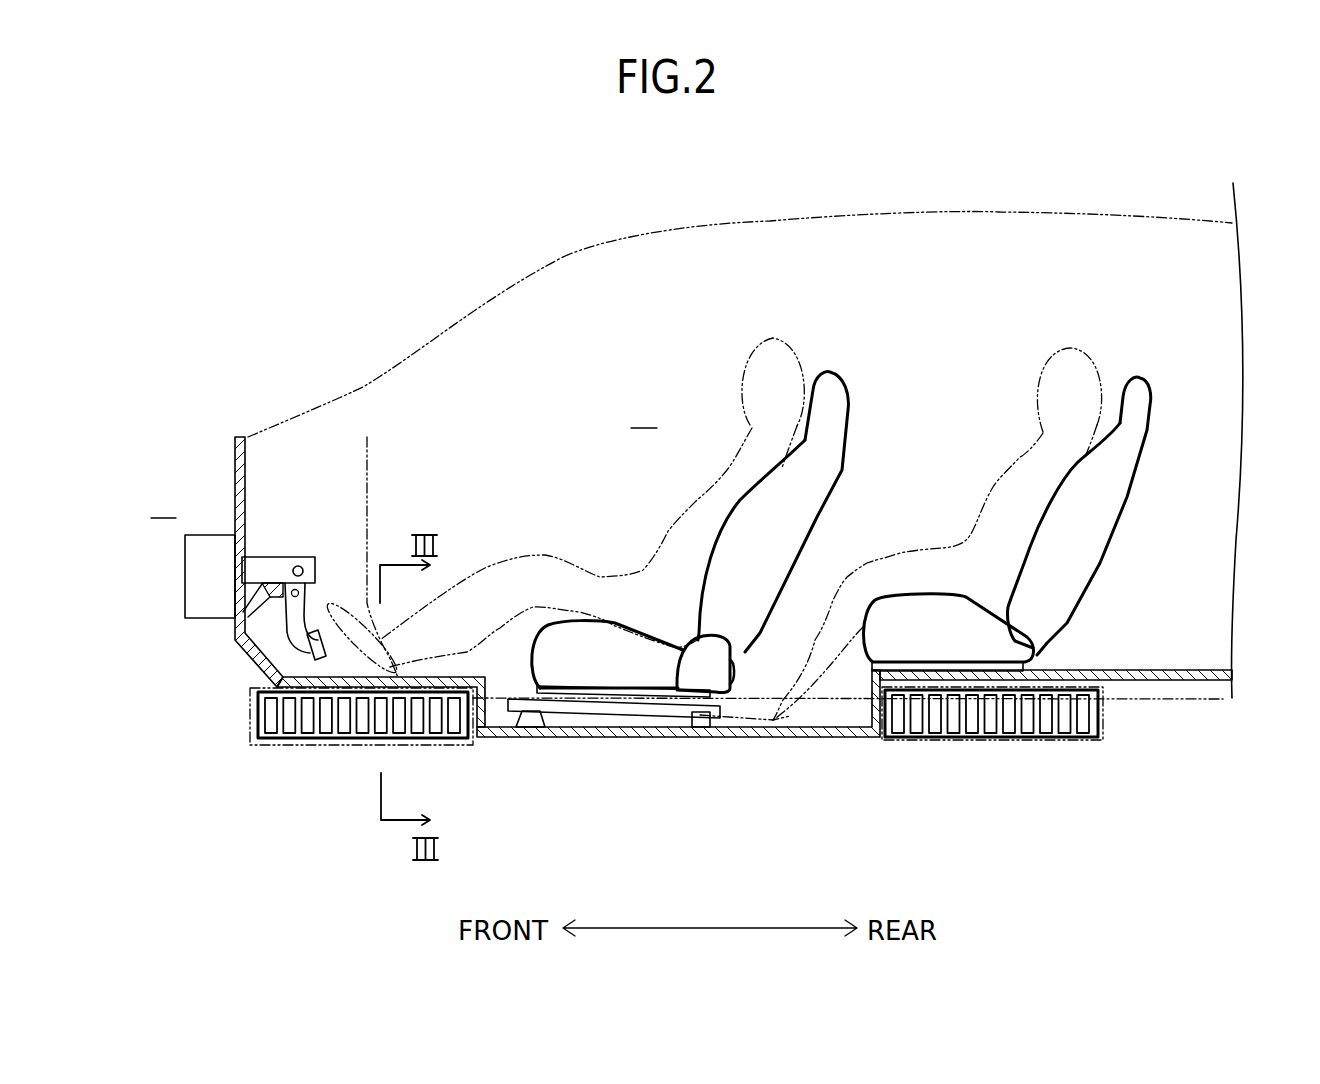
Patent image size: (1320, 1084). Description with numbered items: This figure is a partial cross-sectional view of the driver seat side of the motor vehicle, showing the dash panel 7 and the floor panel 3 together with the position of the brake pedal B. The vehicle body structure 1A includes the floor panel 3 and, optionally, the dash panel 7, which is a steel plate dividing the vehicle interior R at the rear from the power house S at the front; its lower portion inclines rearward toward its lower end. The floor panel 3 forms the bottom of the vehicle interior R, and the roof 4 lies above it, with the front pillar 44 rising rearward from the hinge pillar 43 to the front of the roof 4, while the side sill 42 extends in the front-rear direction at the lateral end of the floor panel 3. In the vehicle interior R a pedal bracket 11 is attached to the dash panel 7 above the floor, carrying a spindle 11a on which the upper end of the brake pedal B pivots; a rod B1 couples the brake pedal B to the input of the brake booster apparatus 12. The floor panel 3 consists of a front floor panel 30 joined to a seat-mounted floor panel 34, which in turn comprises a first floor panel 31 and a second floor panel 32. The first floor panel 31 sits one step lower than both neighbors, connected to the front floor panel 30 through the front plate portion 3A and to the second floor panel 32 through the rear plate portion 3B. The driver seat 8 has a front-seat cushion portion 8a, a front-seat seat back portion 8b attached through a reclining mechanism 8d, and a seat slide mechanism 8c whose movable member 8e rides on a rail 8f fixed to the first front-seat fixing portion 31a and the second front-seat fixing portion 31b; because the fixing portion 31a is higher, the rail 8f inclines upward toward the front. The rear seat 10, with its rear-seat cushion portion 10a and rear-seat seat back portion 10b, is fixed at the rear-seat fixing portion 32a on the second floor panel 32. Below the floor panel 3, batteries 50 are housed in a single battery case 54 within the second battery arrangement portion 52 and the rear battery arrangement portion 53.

The vehicle body structure 1A is at (555, 316).
The floor panel 3 is at (754, 769).
The front plate portion 3A is at (505, 705).
The rear plate portion 3B is at (852, 697).
The roof 4 is at (770, 221).
The dash panel 7 is at (234, 458).
The driver seat 8 is at (698, 506).
The front-seat cushion portion 8a is at (599, 623).
The front-seat seat back portion 8b is at (846, 465).
The seat slide mechanism 8c is at (590, 589).
The reclining mechanism 8d is at (725, 643).
The movable member 8e is at (523, 690).
The rail 8f is at (508, 698).
The rear seat 10 is at (1036, 481).
The rear-seat cushion portion 10a is at (1040, 650).
The rear-seat seat back portion 10b is at (1108, 557).
The pedal bracket 11 is at (257, 597).
The spindle 11a is at (304, 575).
The brake booster apparatus 12 is at (185, 601).
The front floor panel 30 is at (468, 692).
The first floor panel 31 is at (827, 738).
The first front-seat fixing portion 31a is at (538, 734).
The second front-seat fixing portion 31b is at (702, 734).
The second floor panel 32 is at (917, 693).
The rear-seat fixing portion 32a is at (1028, 661).
The seat-mounted floor panel 34 is at (854, 762).
The side sill 42 is at (1190, 699).
The hinge pillar 43 is at (369, 478).
The front pillar 44 is at (435, 331).
The battery 50 is at (380, 718).
The second battery arrangement portion 52 is at (361, 788).
The rear battery arrangement portion 53 is at (1040, 741).
The battery case 54 is at (292, 743).
The brake pedal B is at (285, 636).
The rod B1 is at (274, 598).
The vehicle interior R is at (644, 412).
The power house S is at (163, 502).